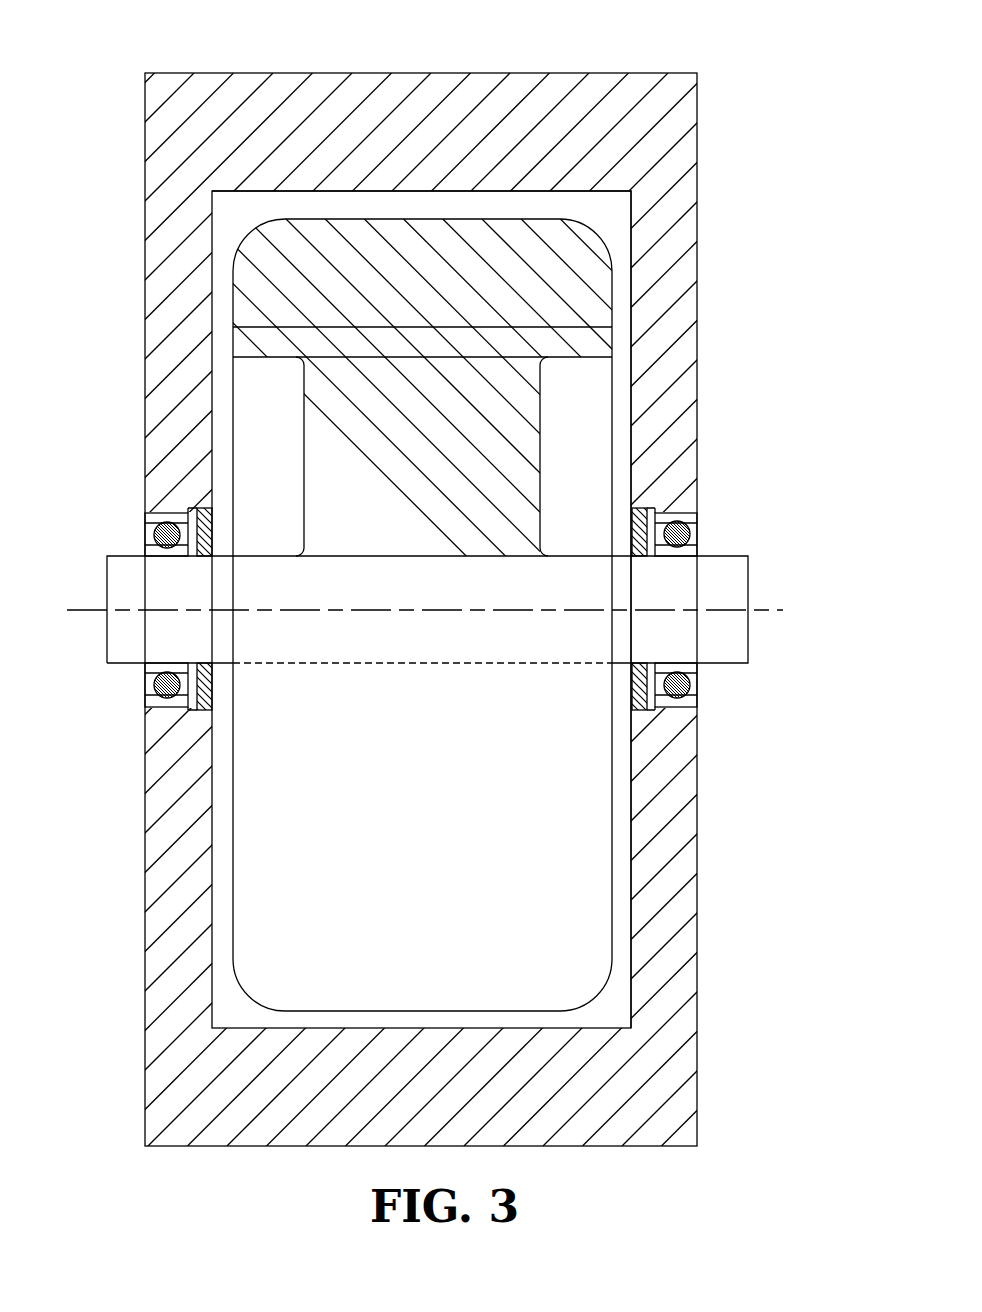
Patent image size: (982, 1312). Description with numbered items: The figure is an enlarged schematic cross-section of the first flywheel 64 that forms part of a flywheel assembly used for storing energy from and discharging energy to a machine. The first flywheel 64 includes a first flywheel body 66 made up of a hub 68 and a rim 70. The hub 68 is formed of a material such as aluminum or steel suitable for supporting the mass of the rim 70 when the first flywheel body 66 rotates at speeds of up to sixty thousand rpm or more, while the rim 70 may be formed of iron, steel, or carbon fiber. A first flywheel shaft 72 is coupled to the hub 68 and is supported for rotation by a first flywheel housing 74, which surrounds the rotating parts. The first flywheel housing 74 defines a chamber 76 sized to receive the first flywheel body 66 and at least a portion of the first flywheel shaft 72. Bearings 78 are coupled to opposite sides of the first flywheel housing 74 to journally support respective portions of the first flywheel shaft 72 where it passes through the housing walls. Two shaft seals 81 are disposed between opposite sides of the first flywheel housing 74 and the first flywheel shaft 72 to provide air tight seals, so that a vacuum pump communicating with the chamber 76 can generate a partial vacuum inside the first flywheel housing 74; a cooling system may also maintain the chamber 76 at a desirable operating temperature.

The first flywheel 64 is at (187, 73).
The first flywheel body 66 is at (567, 433).
The hub 68 is at (322, 512).
The rim 70 is at (267, 248).
The first flywheel shaft 72 is at (715, 592).
The first flywheel housing 74 is at (687, 270).
The chamber 76 is at (573, 210).
The bearings 78 is at (155, 699).
The shaft seals 81 is at (650, 510).